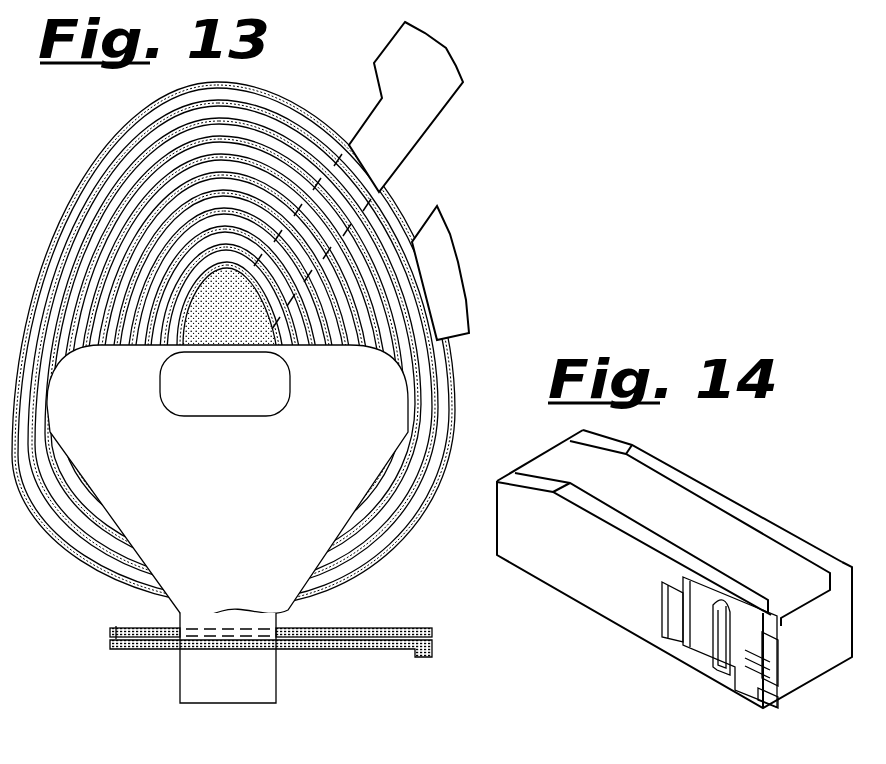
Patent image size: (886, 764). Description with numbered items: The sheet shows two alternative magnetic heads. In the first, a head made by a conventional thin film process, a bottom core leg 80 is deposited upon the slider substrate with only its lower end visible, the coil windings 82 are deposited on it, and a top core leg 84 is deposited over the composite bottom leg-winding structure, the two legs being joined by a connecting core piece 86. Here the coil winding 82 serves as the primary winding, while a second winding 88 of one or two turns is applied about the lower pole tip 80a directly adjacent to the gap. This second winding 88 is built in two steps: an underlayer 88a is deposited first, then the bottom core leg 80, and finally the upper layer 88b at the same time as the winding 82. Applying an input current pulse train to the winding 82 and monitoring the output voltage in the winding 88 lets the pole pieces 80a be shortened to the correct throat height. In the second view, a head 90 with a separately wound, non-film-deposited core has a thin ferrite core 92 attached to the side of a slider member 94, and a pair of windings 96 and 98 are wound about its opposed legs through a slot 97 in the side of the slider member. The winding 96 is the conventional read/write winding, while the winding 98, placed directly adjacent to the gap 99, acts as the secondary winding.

In FIG. 13, the bottom core leg 80 is at (272, 621).
In FIG. 13, the lower pole tip 80a is at (275, 692).
In FIG. 13, the coil windings 82 is at (90, 162).
In FIG. 13, the top core leg 84 is at (262, 519).
In FIG. 13, the connecting core piece 86 is at (176, 401).
In FIG. 13, the second winding 88 is at (291, 651).
In FIG. 13, the underlayer 88a is at (393, 628).
In FIG. 13, the upper layer 88b is at (385, 648).
In FIG. 14, the head 90 is at (716, 478).
In FIG. 14, the ferrite core 92 is at (698, 640).
In FIG. 14, the slider member 94 is at (565, 556).
In FIG. 14, the read/write winding 96 is at (776, 688).
In FIG. 14, the slot 97 is at (772, 660).
In FIG. 14, the secondary winding 98 is at (675, 610).
In FIG. 14, the gap 99 is at (728, 598).